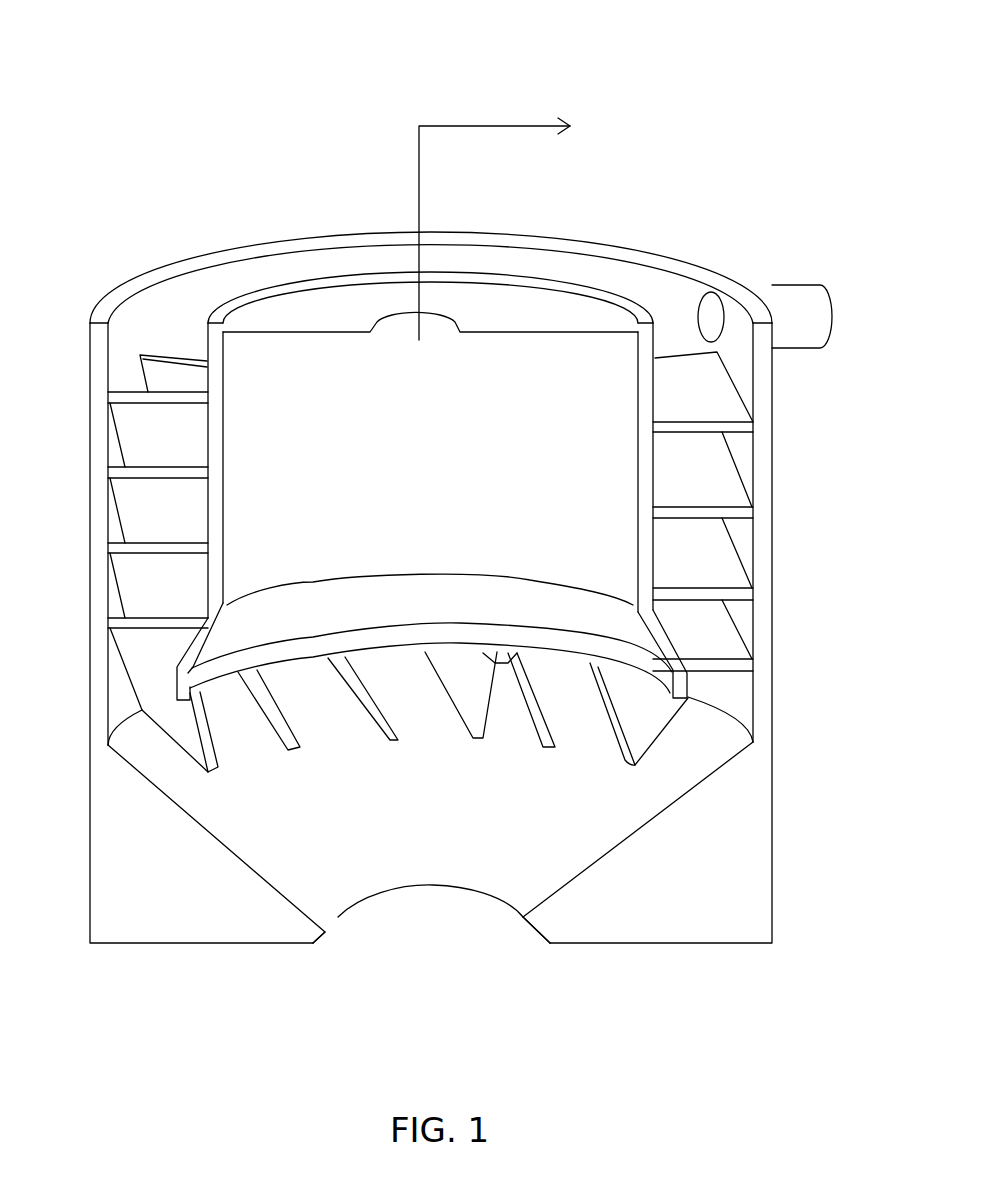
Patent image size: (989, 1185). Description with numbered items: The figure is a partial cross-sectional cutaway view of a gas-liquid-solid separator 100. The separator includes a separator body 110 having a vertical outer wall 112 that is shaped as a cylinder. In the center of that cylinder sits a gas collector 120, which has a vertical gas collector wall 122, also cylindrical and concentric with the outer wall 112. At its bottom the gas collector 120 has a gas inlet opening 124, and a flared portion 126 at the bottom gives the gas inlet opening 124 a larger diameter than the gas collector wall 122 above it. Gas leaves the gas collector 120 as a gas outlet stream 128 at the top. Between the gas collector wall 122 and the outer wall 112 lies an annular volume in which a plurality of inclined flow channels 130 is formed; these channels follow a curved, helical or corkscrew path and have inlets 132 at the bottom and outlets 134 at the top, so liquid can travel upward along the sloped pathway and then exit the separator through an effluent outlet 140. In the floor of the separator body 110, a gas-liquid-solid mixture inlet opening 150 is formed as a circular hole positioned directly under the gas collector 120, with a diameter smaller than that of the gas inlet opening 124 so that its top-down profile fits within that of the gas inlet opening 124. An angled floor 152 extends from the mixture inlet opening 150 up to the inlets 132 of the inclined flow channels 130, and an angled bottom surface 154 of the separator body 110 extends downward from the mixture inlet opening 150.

The gas-liquid-solid separator 100 is at (155, 58).
The separator body 110 is at (762, 850).
The vertical outer wall 112 is at (100, 313).
The gas collector 120 is at (555, 312).
The vertical gas collector wall 122 is at (645, 322).
The gas inlet opening 124 is at (327, 637).
The flared portion 126 is at (193, 643).
The gas outlet stream 128 is at (418, 173).
The inclined flow channels 130 is at (719, 547).
The inlets 132 is at (250, 755).
The outlets 134 is at (160, 390).
The effluent outlet 140 is at (795, 338).
The gas-liquid-solid mixture inlet opening 150 is at (442, 912).
The angled floor 152 is at (360, 887).
The angled bottom surface 154 is at (325, 932).